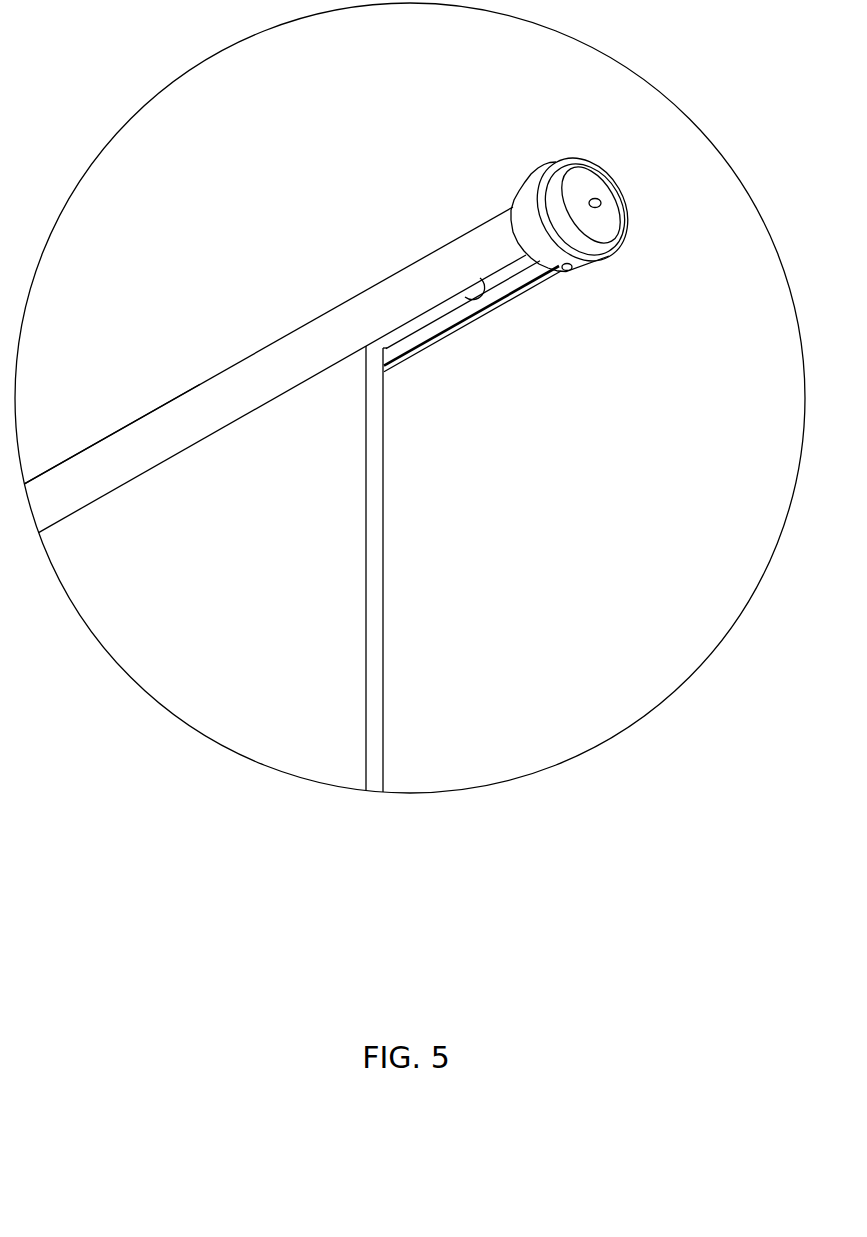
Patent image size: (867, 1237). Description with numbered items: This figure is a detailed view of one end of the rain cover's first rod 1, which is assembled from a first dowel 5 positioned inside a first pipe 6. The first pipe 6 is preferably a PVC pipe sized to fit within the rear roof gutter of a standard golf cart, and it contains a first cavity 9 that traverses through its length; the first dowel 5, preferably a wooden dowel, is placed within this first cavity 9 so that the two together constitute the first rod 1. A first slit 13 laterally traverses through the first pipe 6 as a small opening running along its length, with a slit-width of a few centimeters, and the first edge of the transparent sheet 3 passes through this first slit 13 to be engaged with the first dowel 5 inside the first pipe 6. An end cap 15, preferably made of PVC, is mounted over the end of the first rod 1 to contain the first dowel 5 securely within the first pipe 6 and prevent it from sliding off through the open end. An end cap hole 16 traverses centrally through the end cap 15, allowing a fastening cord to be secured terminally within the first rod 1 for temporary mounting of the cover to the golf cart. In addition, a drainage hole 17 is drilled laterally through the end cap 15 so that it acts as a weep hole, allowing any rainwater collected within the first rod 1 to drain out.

The first rod 1 is at (218, 364).
The transparent sheet 3 is at (373, 523).
The first dowel 5 is at (453, 301).
The first pipe 6 is at (96, 455).
The first cavity 9 is at (516, 273).
The first slit 13 is at (490, 305).
The end cap 15 is at (561, 167).
The end cap hole 16 is at (607, 203).
The drainage hole 17 is at (566, 280).